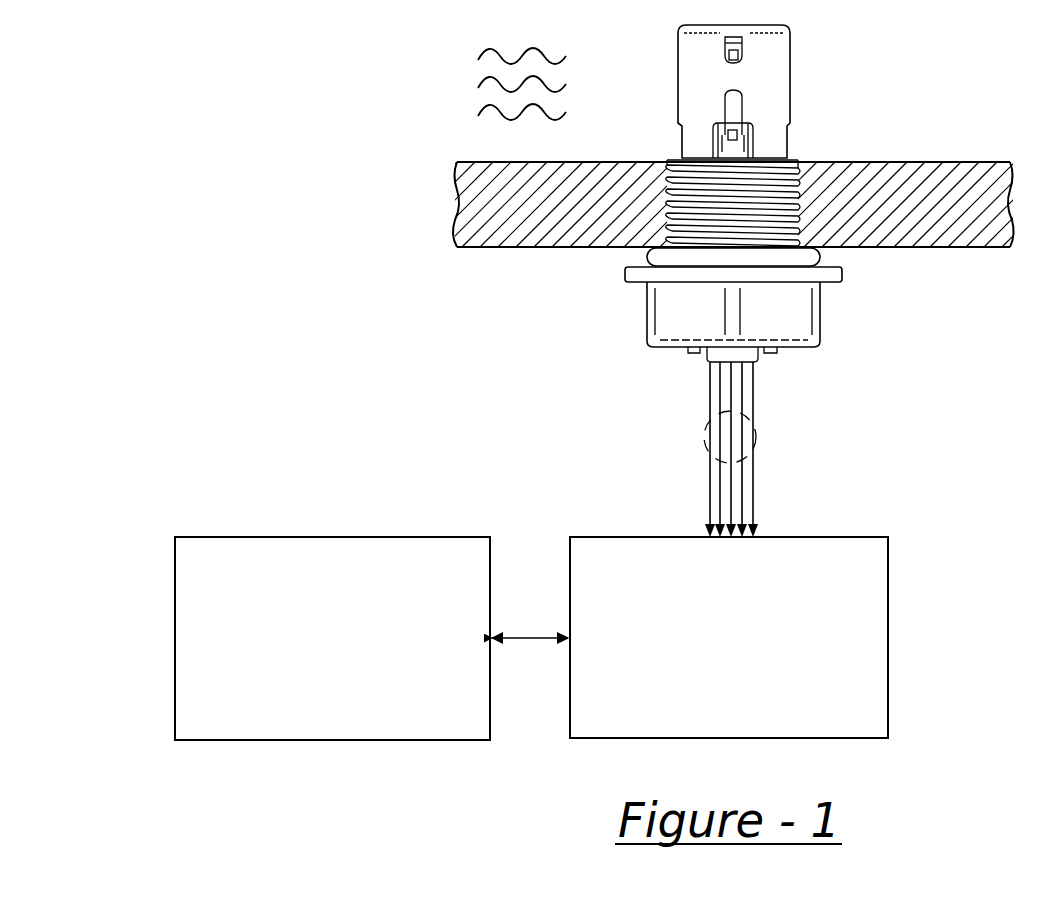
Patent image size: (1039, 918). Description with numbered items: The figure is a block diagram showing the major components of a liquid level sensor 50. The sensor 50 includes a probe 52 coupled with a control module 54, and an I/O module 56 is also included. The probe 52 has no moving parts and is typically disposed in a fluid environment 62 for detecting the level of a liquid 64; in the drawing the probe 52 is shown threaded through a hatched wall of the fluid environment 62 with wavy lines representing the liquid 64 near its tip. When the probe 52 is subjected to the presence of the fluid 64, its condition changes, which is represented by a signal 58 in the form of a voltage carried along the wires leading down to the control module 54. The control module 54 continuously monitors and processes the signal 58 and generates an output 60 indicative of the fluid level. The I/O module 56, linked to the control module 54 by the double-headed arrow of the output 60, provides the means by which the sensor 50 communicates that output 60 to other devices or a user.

The sensor 50 is at (278, 230).
The probe 52 is at (678, 103).
The control module 54 is at (888, 680).
The I/O module 56 is at (332, 740).
The signal 58 is at (700, 432).
The output 60 is at (509, 638).
The fluid environment 62 is at (893, 108).
The liquid 64 is at (458, 82).